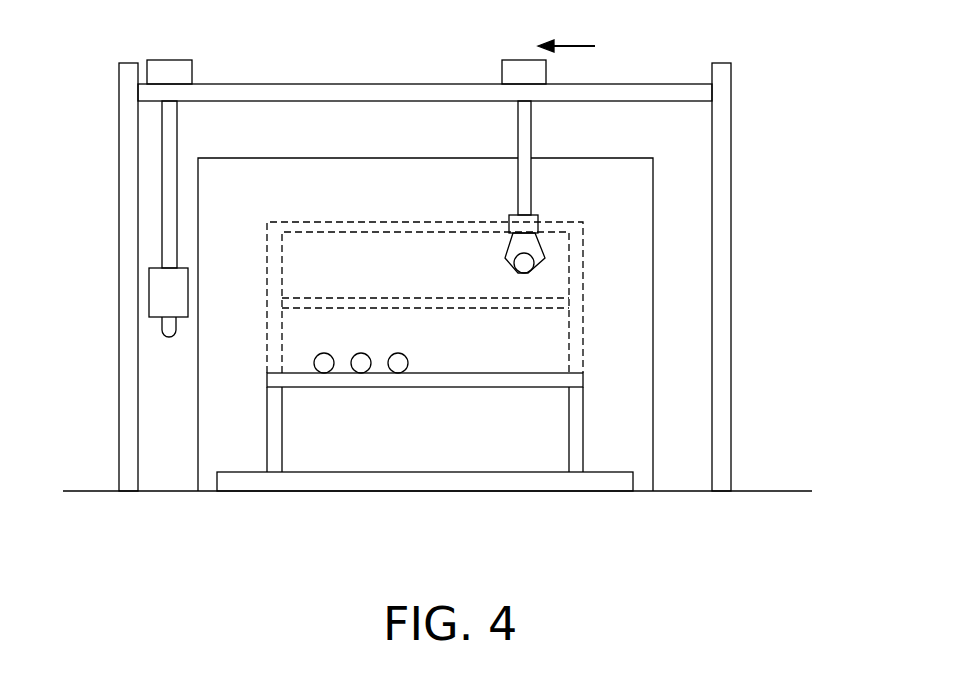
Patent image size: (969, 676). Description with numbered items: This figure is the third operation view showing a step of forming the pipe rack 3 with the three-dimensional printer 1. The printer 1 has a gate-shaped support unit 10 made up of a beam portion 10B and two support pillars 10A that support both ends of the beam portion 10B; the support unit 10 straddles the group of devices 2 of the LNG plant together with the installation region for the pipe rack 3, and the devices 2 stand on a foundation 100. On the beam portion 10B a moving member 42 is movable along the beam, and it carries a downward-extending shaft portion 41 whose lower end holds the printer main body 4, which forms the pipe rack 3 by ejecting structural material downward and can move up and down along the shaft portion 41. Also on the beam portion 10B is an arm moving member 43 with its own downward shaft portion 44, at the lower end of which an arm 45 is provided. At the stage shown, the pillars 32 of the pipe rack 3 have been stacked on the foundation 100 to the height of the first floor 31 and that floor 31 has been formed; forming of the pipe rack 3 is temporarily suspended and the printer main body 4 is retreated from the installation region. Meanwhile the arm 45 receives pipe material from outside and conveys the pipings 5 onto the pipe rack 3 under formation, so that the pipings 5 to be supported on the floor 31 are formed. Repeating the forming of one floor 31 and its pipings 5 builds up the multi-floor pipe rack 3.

The 3D printer 1 is at (449, 282).
The devices 2 is at (640, 302).
The pipe rack 3 is at (422, 457).
The floor 31 is at (490, 387).
The pillars 32 is at (265, 457).
The printer main body 4 is at (178, 180).
The shaft portion 41 is at (177, 128).
The moving member 42 is at (178, 47).
The arm moving member 43 is at (517, 60).
The shaft portion 44 is at (531, 128).
The arm 45 is at (561, 148).
The piping 5 is at (397, 354).
The support unit 10 is at (477, 268).
The support pillars 10A is at (732, 383).
The beam portion 10B is at (382, 70).
The foundation 100 is at (419, 485).